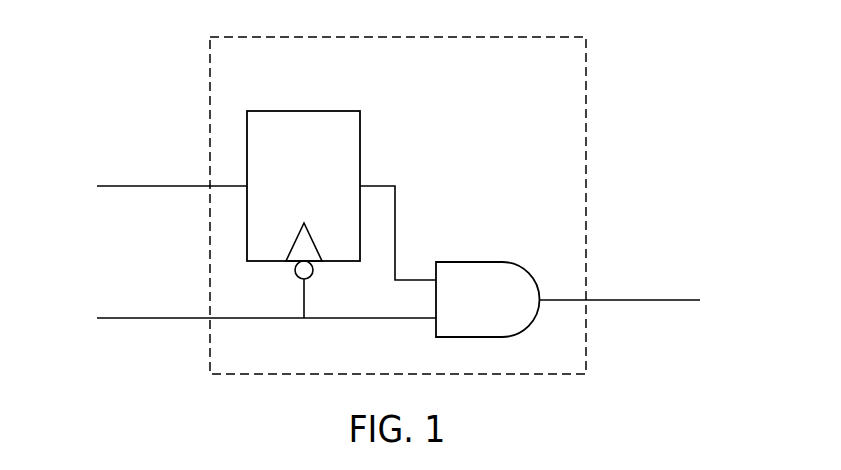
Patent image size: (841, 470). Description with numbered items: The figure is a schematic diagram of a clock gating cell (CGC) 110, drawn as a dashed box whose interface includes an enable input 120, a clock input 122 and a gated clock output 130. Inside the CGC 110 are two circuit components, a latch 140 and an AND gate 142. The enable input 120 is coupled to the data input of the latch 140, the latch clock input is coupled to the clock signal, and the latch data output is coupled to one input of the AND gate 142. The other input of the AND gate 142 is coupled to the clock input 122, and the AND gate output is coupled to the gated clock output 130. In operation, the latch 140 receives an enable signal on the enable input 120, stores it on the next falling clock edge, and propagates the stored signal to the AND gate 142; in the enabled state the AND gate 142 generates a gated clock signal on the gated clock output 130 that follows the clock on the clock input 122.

The clock gating cell 110 is at (385, 94).
The enable input 120 is at (138, 187).
The clock input 122 is at (250, 310).
The gated clock output 130 is at (670, 299).
The latch 140 is at (321, 189).
The AND gate 142 is at (468, 307).